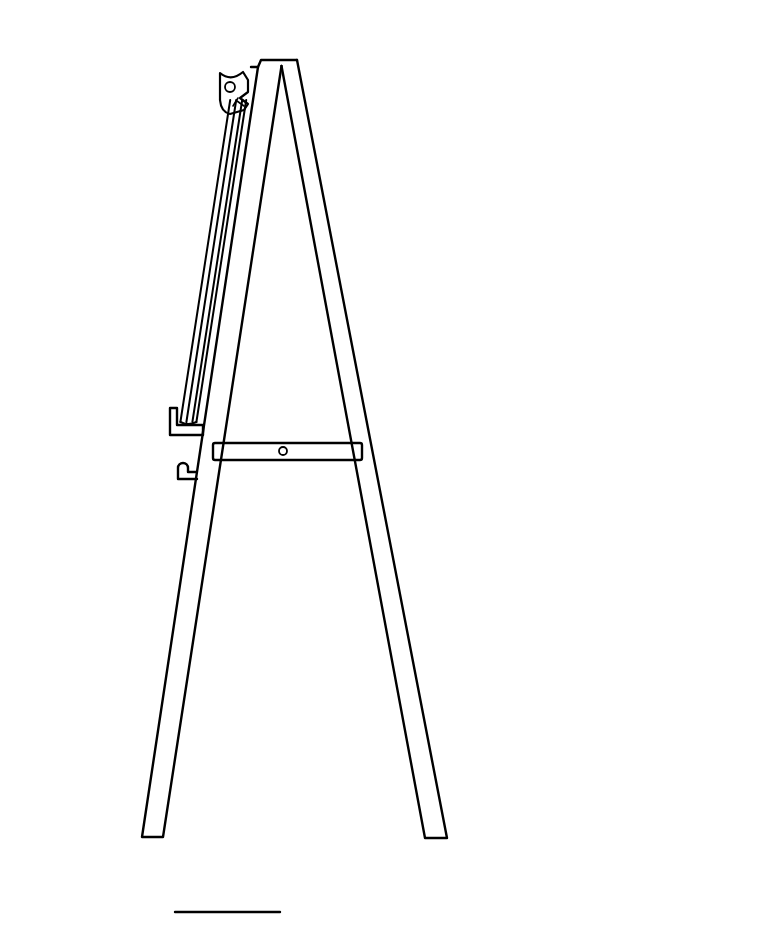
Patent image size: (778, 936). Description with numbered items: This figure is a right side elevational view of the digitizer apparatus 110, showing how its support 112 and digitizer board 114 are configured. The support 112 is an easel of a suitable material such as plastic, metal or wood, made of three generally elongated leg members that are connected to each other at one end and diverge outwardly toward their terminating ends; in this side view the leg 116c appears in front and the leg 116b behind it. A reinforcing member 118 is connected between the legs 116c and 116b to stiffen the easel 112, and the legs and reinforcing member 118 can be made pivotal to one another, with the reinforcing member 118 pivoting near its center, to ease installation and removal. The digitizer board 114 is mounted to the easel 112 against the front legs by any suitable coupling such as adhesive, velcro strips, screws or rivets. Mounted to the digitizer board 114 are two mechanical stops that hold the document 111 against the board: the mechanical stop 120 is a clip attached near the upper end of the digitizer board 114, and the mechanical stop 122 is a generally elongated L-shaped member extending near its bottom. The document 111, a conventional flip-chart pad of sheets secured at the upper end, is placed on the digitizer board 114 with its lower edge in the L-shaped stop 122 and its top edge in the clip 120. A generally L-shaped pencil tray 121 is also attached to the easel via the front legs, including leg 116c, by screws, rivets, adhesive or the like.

The apparatus 110 is at (378, 130).
The document 111 is at (209, 221).
The support 112 is at (367, 352).
The digitizer board 114 is at (257, 63).
The leg member 116b is at (390, 583).
The leg member 116c is at (202, 587).
The reinforcing member 118 is at (260, 443).
The mechanical stop 120 is at (220, 94).
The pencil tray 121 is at (176, 469).
The mechanical stop 122 is at (170, 421).